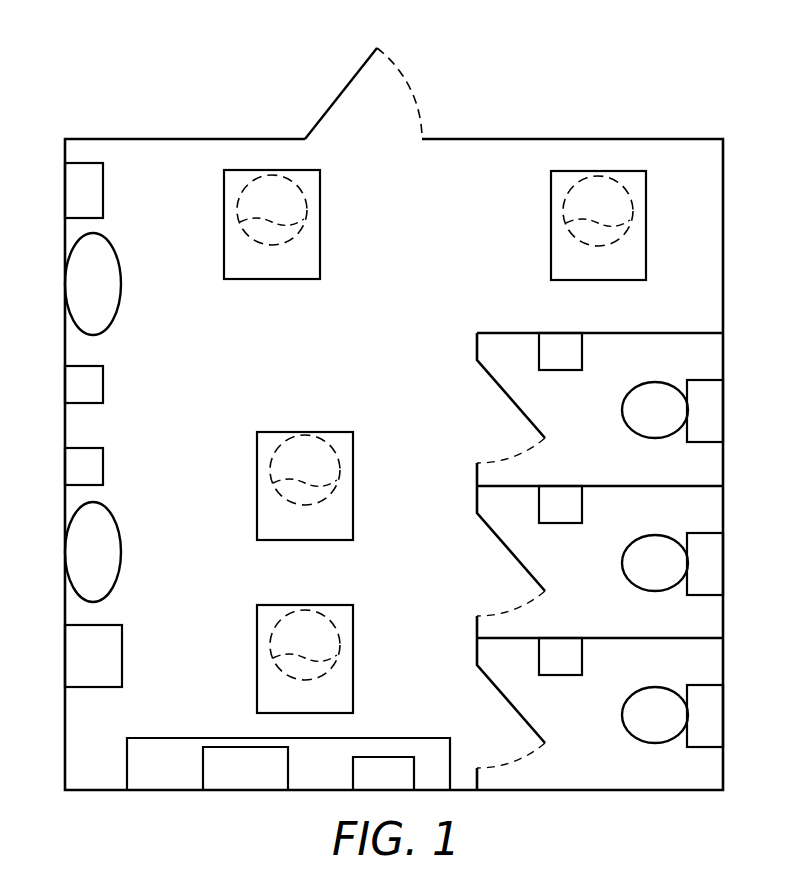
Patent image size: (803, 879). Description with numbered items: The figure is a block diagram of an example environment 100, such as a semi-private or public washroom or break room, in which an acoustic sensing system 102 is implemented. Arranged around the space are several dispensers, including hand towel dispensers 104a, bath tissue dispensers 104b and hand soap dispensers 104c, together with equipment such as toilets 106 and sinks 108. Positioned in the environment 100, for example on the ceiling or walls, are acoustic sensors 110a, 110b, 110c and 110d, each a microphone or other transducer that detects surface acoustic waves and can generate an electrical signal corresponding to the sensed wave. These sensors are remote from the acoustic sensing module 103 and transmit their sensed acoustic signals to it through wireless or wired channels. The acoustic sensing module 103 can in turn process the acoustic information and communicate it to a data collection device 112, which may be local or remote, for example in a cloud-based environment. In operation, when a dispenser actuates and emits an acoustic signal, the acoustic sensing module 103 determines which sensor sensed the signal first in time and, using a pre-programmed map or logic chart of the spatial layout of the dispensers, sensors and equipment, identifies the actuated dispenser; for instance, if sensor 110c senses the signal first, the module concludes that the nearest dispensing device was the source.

The environment 100 is at (578, 83).
The acoustic sensing system 102 is at (294, 271).
The acoustic sensing module 103 is at (270, 780).
The hand towel dispenser 104a is at (103, 190).
The bath tissue dispenser 104b is at (567, 376).
The hand soap dispenser 104c is at (103, 397).
The toilet 106 is at (698, 430).
The sink 108 is at (121, 283).
The acoustic sensor 110a is at (305, 645).
The acoustic sensor 110b is at (305, 470).
The acoustic sensor 110c is at (272, 210).
The acoustic sensor 110d is at (598, 211).
The data collection device 112 is at (406, 780).